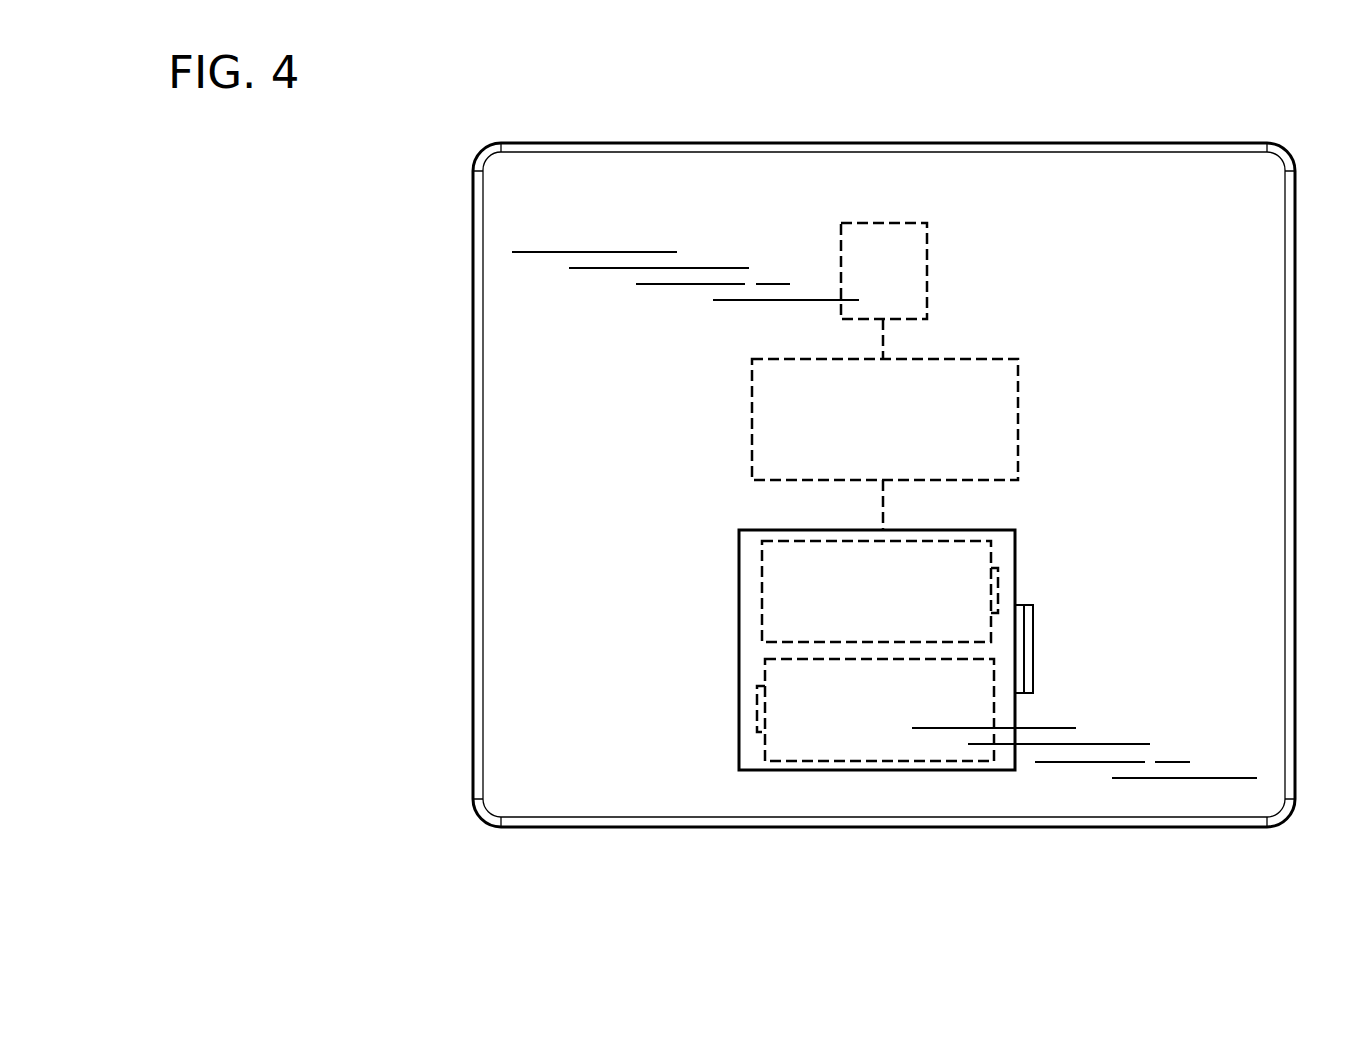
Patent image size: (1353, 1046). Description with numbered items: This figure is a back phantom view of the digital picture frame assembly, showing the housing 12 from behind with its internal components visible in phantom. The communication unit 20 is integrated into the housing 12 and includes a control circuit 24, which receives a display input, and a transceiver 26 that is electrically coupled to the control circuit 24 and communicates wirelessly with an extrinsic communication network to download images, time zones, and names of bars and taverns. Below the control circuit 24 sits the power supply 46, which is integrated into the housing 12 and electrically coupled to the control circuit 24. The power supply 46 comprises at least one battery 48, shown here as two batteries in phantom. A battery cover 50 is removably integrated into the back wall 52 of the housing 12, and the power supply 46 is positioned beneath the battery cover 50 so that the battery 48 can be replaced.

The housing 12 is at (1283, 145).
The communication unit 20 is at (1024, 338).
The control circuit 24 is at (752, 383).
The transceiver 26 is at (841, 228).
The power supply 46 is at (762, 620).
The battery 48 is at (840, 620).
The battery cover 50 is at (1015, 740).
The back wall 52 is at (534, 193).